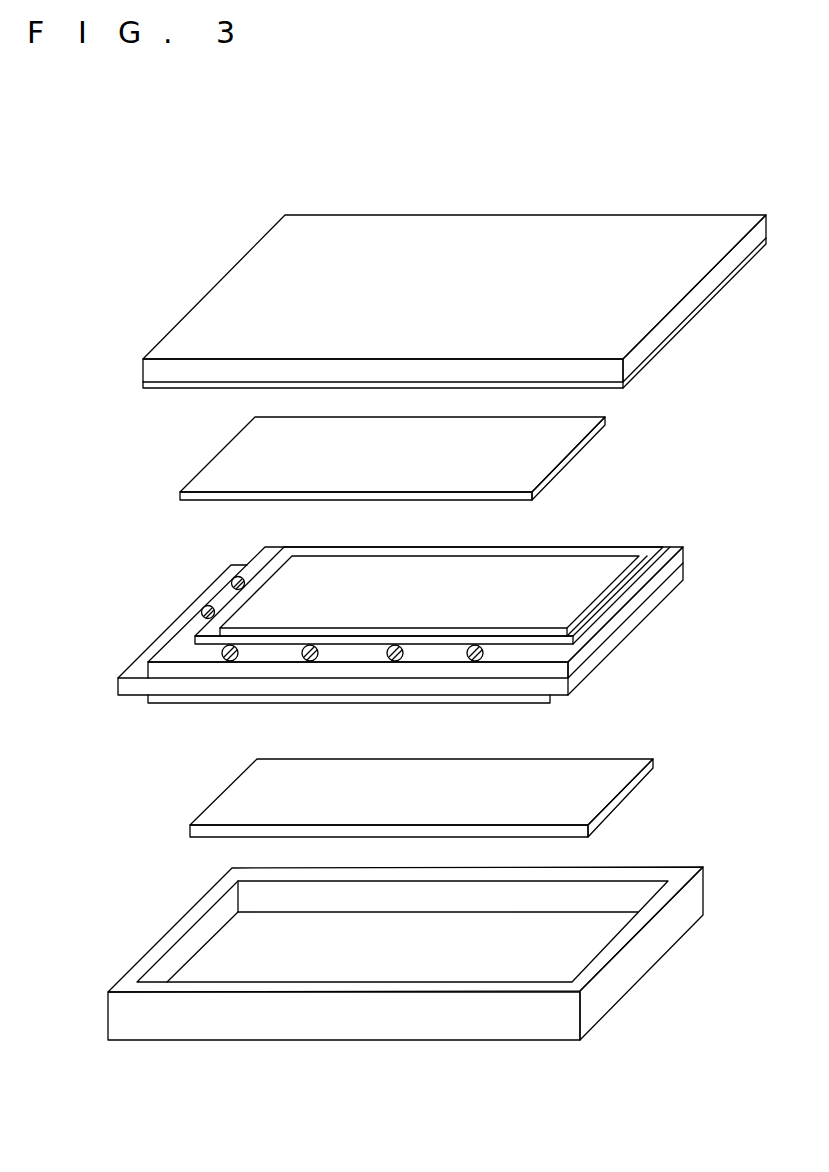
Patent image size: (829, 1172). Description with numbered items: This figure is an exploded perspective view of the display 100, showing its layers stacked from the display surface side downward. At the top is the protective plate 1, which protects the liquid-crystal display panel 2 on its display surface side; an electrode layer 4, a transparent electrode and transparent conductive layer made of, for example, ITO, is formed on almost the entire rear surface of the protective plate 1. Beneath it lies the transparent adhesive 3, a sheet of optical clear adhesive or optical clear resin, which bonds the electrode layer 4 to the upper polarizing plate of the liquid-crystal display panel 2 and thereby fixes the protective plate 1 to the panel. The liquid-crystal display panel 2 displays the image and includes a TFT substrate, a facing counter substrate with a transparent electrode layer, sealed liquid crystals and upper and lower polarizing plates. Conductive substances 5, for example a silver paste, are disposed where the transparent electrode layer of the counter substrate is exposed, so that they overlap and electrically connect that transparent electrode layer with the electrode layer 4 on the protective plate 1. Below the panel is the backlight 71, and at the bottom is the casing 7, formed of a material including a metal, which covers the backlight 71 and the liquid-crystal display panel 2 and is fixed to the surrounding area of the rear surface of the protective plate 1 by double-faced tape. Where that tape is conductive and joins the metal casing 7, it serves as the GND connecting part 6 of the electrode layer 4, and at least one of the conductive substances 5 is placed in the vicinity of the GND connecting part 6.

The protective plate 1 is at (237, 292).
The electrode layer 4 is at (600, 383).
The transparent adhesive 3 is at (221, 468).
The liquid-crystal display panel 2 is at (212, 562).
The conductive substances 5 is at (209, 606).
The backlight 71 is at (602, 766).
The GND connecting part 6 is at (175, 935).
The casing 7 is at (123, 1014).
The display 100 is at (447, 1064).